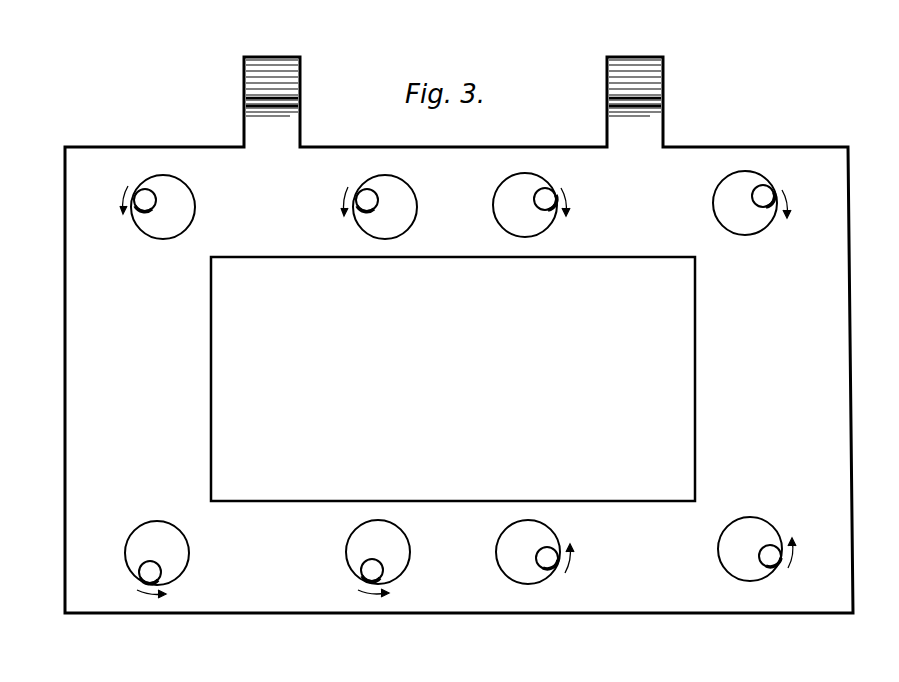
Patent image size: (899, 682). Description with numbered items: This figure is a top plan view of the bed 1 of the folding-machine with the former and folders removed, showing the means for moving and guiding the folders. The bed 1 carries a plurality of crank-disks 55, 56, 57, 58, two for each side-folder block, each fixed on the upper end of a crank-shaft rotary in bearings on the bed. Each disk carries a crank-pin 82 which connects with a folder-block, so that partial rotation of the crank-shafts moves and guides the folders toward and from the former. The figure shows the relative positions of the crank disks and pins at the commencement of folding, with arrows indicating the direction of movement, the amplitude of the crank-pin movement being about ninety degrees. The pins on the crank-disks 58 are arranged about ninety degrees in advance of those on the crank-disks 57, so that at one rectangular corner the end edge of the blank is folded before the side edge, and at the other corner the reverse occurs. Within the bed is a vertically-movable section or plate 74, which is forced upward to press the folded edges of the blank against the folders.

The bed 1 is at (73, 398).
The crank-disk 55 is at (180, 220).
The crank-disk 56 is at (547, 218).
The crank-disk 57 is at (140, 534).
The crank-disk 58 is at (550, 542).
The vertically-movable section or plate 74 is at (453, 379).
The crank-pin 82 is at (153, 204).